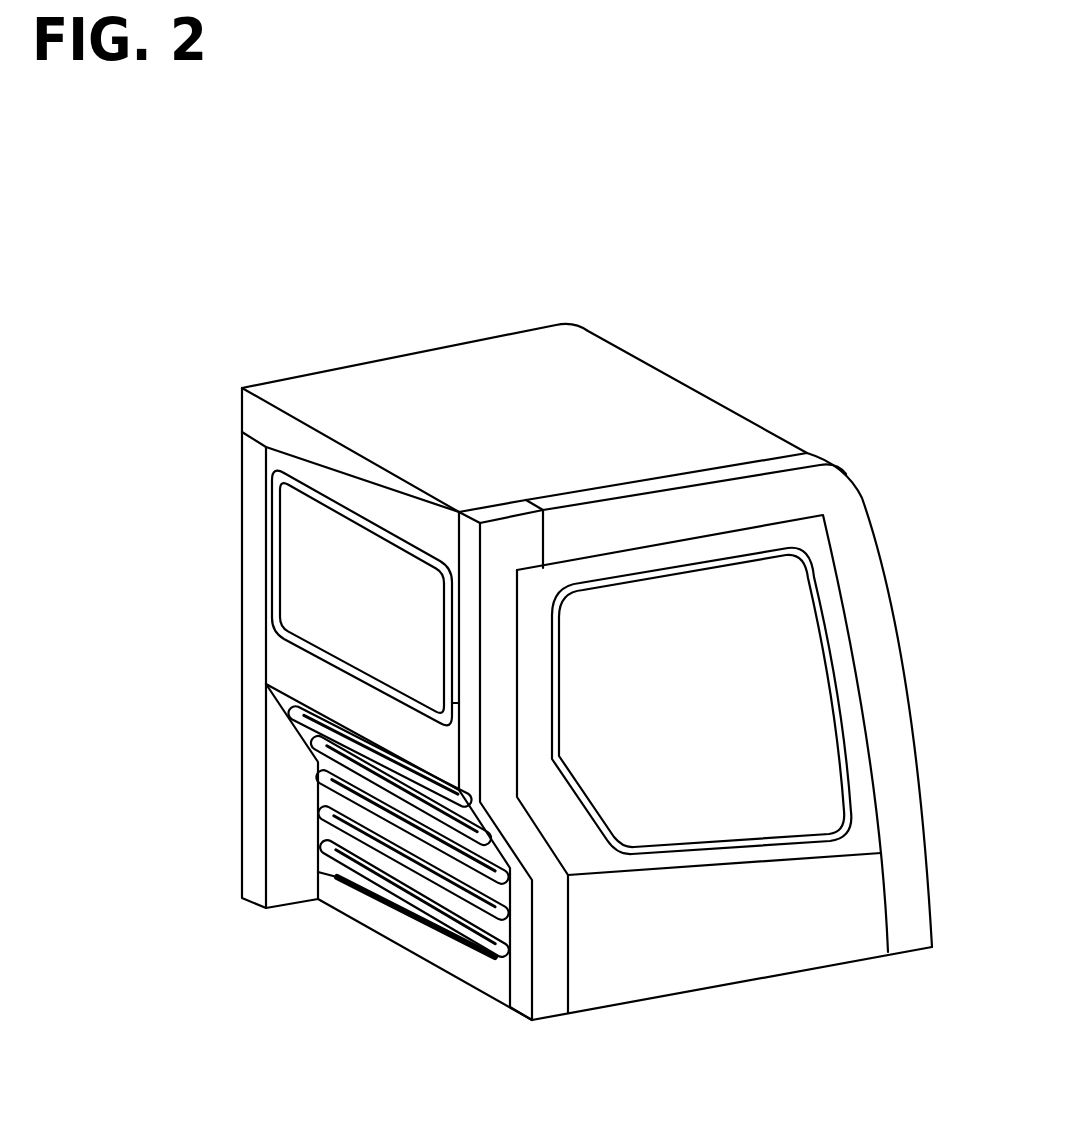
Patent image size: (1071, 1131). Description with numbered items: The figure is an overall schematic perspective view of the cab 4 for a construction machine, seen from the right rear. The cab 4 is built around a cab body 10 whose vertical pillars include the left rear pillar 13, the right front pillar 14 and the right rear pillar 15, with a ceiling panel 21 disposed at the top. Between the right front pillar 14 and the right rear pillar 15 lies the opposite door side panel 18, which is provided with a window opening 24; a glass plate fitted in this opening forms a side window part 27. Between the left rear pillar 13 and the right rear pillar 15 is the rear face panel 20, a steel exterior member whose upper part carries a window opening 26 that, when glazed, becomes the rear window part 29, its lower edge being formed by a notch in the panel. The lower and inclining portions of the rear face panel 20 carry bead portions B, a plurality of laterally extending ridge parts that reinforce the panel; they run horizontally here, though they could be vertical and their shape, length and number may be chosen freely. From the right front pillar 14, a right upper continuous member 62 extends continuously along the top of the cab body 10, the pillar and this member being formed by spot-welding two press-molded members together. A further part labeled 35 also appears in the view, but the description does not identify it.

The cab 4 is at (668, 295).
The cab body 10 is at (368, 327).
The left rear pillar 13 is at (252, 731).
The right front pillar 14 is at (905, 905).
The right rear pillar 15 is at (509, 985).
The opposite door side panel 18 is at (757, 947).
The rear face panel 20 is at (358, 860).
The ceiling panel 21 is at (492, 375).
The window opening 24 is at (705, 840).
The window opening 26 is at (278, 585).
The side window part 27 is at (800, 631).
The rear window part 29 is at (300, 548).
The corner pillar 35 is at (553, 950).
The right upper continuous member 62 is at (728, 468).
The bead portions B is at (335, 798).